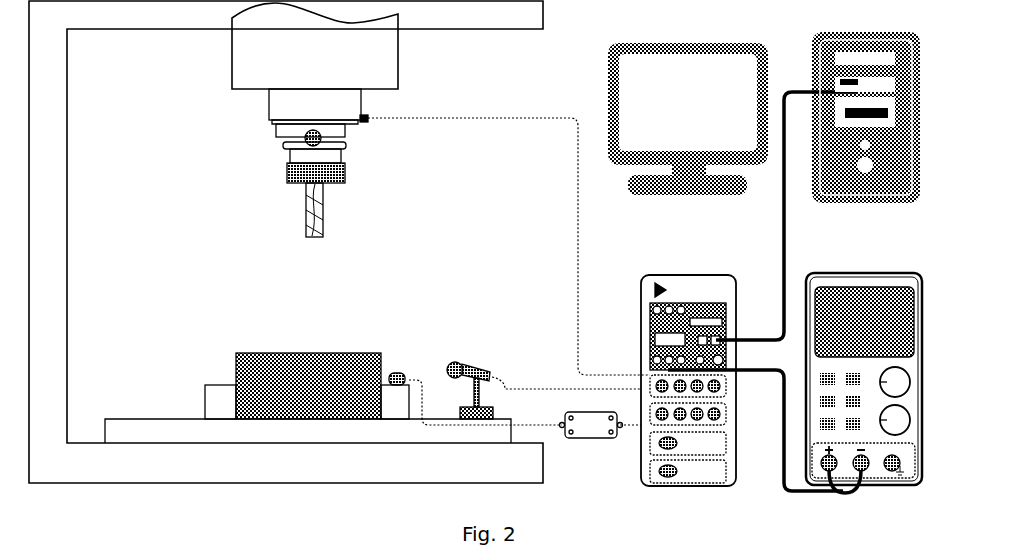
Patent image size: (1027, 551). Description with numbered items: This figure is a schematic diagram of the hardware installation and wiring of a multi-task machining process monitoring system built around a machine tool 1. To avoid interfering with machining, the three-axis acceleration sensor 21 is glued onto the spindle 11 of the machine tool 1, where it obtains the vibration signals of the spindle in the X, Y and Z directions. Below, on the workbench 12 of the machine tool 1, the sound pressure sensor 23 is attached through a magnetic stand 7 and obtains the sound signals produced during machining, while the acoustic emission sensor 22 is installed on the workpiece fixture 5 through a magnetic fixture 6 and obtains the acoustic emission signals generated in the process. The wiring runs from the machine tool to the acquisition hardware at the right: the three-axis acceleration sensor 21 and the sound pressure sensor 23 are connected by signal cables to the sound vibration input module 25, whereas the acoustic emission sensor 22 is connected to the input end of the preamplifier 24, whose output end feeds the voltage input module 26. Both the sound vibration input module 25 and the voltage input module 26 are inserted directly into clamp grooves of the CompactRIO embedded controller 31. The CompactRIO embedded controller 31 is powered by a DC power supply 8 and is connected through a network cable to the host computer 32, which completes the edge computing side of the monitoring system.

The machine tool 1 is at (398, 60).
The spindle of machine tool 11 is at (269, 120).
The three-axis acceleration sensor 21 is at (368, 122).
The workbench of machine tool 12 is at (183, 430).
The workpiece fixture 5 is at (223, 395).
The magnetic fixture 6 is at (395, 375).
The acoustic emission sensor 22 is at (403, 375).
The sound pressure sensor 23 is at (467, 366).
The magnetic stand 7 is at (492, 408).
The preamplifier 24 is at (578, 438).
The sound vibration input module 25 is at (775, 415).
The voltage input module 26 is at (775, 449).
The CompactRIO embedded controller 31 is at (772, 265).
The host computer 32 is at (875, 195).
The DC power supply 8 is at (878, 285).